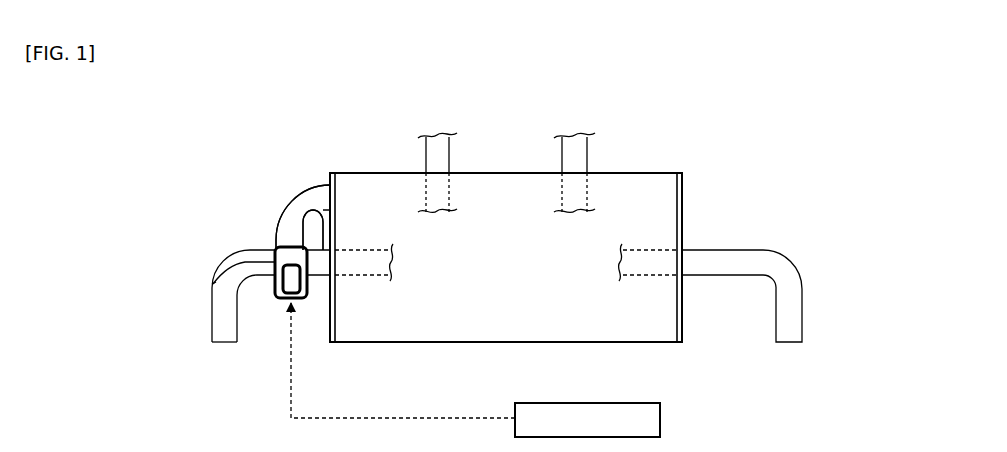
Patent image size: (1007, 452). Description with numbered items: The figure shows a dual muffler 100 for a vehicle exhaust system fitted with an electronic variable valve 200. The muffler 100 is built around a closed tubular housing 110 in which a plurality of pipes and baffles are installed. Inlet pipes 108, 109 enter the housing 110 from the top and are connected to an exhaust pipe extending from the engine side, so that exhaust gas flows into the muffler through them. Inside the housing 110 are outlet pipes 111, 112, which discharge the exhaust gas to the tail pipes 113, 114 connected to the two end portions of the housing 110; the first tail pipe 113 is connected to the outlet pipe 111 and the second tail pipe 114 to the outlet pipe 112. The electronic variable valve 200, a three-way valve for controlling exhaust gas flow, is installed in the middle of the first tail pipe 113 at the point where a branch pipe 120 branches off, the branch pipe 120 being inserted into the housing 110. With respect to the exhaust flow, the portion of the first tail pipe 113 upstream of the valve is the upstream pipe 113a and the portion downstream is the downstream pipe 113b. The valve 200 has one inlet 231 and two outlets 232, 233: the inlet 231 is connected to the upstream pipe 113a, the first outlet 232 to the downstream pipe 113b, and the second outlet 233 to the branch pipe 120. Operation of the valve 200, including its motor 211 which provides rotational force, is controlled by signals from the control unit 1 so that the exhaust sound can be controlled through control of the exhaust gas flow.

The control unit 1 is at (660, 420).
The muffler 100 is at (689, 193).
The inlet pipe 108 is at (453, 200).
The inlet pipe 109 is at (590, 200).
The housing 110 is at (382, 172).
The outlet pipe 111 is at (373, 277).
The outlet pipe 112 is at (647, 277).
The first tail pipe 113 is at (268, 125).
The upstream pipe 113a is at (315, 212).
The downstream pipe 113b is at (242, 250).
The tail pipe 114 is at (792, 267).
The branch pipe 120 is at (317, 178).
The electronic variable valve 200 is at (265, 287).
The motor 211 is at (214, 282).
The inlet 231 is at (308, 272).
The first outlet 232 is at (227, 265).
The second outlet 233 is at (292, 246).